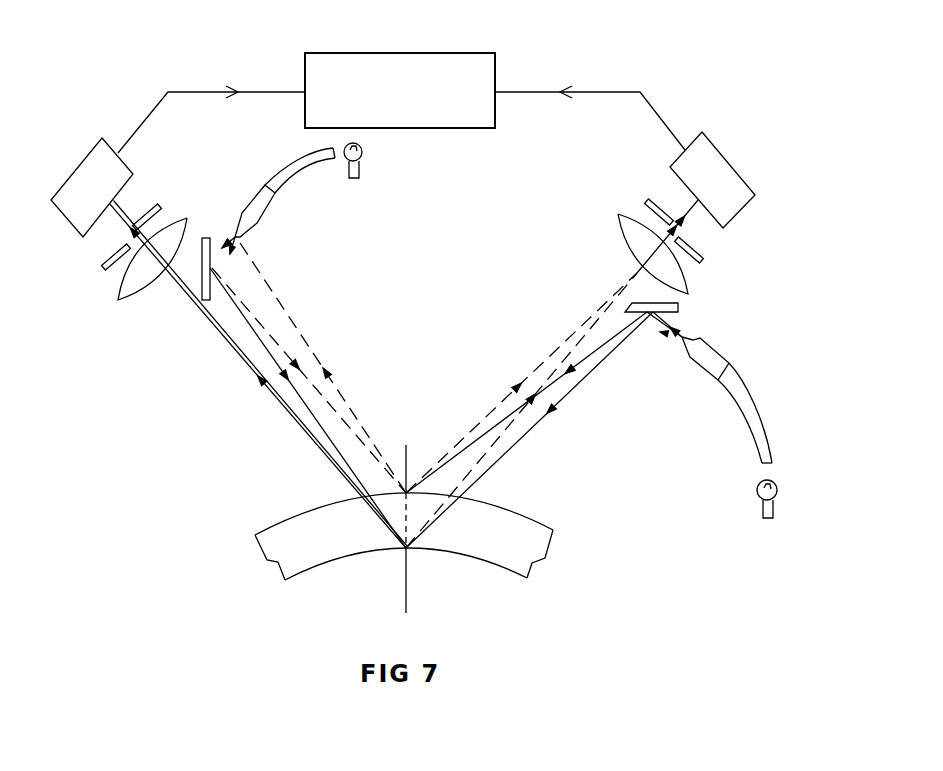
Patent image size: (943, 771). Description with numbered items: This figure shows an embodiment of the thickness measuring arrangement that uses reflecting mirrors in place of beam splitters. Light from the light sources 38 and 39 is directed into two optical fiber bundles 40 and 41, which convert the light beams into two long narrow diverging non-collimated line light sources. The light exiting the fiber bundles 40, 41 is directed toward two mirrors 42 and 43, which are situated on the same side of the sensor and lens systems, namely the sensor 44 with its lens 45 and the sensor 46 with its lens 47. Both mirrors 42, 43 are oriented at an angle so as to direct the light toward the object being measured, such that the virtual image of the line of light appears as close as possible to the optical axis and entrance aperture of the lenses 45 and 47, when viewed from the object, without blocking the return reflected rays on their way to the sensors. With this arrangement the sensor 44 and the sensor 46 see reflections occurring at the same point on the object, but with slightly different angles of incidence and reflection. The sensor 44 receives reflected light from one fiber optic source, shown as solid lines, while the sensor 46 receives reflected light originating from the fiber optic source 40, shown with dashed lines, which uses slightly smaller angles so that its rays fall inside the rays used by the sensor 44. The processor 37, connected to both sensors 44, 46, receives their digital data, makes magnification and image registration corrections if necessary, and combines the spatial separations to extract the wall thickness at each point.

The processor 37 is at (427, 53).
The light source 38 is at (362, 153).
The light source 39 is at (776, 484).
The optical fiber bundle 40 is at (248, 198).
The optical fiber bundle 41 is at (715, 348).
The mirror 42 is at (207, 237).
The mirror 43 is at (678, 307).
The sensor 44 is at (65, 217).
The lens 45 is at (118, 298).
The sensor 46 is at (720, 183).
The lens 47 is at (690, 292).